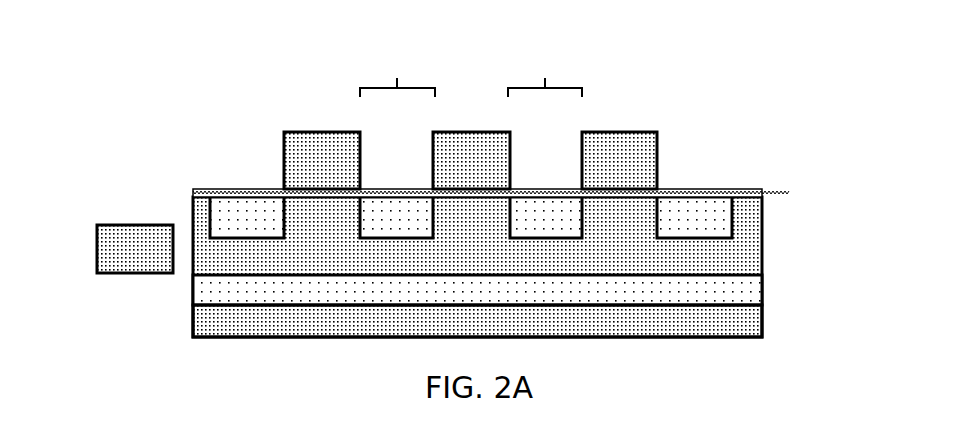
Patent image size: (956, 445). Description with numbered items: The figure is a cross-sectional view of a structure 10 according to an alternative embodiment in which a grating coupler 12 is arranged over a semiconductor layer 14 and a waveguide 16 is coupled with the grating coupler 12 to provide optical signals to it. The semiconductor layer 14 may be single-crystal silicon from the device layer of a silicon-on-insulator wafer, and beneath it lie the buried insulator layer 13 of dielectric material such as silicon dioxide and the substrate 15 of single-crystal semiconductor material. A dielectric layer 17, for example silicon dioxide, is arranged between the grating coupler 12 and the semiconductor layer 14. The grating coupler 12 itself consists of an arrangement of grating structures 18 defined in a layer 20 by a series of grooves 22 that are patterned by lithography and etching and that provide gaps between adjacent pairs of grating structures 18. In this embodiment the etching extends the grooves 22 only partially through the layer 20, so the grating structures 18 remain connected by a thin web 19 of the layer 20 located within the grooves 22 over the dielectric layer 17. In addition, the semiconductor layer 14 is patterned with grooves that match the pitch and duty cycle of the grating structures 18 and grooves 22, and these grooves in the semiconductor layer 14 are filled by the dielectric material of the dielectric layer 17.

The structure 10 is at (191, 66).
The grating coupler 12 is at (702, 111).
The buried insulator layer 13 is at (745, 298).
The semiconductor layer 14 is at (738, 255).
The substrate 15 is at (745, 323).
The waveguide 16 is at (115, 242).
The dielectric layer 17 is at (707, 220).
The grating structures 18 is at (325, 153).
The thin web 19 is at (193, 189).
The layer 20 is at (662, 158).
The grooves 22 is at (471, 73).